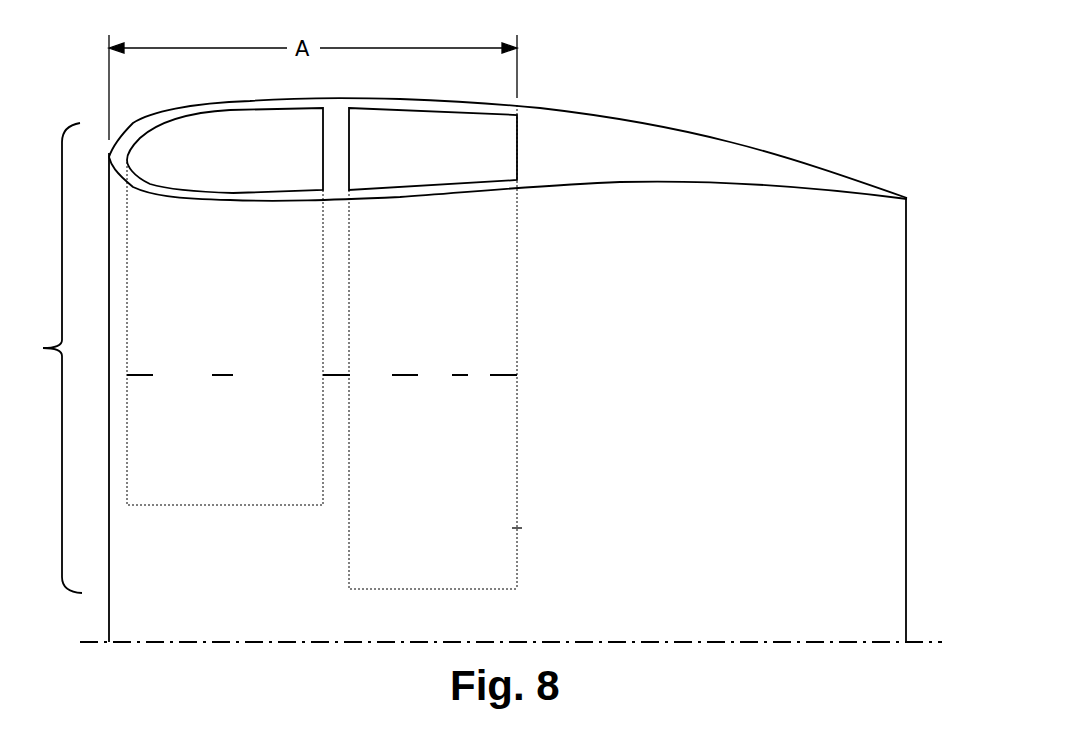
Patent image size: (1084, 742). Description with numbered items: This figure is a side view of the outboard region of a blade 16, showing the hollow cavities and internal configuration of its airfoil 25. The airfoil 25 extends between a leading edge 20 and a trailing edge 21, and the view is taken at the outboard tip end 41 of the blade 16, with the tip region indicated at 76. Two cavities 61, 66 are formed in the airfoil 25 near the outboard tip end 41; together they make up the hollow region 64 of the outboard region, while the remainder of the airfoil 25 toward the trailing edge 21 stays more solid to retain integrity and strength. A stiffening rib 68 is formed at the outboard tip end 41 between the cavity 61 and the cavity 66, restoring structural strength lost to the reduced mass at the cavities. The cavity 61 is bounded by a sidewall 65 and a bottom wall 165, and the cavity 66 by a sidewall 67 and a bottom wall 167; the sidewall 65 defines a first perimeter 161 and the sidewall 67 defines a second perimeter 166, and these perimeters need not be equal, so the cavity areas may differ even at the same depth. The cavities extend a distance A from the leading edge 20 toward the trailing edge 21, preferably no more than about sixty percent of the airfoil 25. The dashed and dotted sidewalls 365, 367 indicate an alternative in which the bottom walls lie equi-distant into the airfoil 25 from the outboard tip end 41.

The blade 16 is at (802, 89).
The leading edge 20 is at (108, 231).
The trailing edge 21 is at (907, 484).
The airfoil 25 is at (918, 395).
The outboard tip end 41 is at (612, 143).
The cavity 61 is at (275, 150).
The hollow region 64 is at (838, 557).
The sidewall 65 is at (127, 364).
The cavity 66 is at (433, 149).
The sidewall 67 is at (518, 300).
The stiffening rib 68 is at (333, 133).
The tip region 76 is at (578, 84).
The first perimeter 161 is at (232, 112).
The bottom wall 165 is at (213, 506).
The second perimeter 166 is at (413, 110).
The bottom wall 167 is at (427, 590).
The dashed and dotted sidewall 365 is at (221, 375).
The dashed and dotted sidewall 367 is at (452, 375).